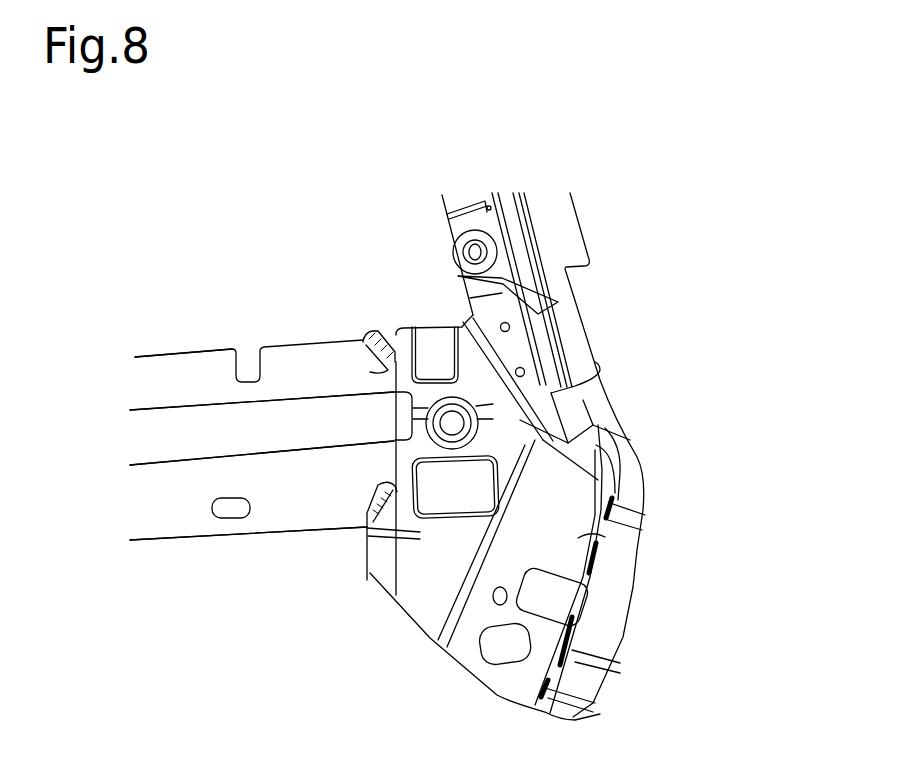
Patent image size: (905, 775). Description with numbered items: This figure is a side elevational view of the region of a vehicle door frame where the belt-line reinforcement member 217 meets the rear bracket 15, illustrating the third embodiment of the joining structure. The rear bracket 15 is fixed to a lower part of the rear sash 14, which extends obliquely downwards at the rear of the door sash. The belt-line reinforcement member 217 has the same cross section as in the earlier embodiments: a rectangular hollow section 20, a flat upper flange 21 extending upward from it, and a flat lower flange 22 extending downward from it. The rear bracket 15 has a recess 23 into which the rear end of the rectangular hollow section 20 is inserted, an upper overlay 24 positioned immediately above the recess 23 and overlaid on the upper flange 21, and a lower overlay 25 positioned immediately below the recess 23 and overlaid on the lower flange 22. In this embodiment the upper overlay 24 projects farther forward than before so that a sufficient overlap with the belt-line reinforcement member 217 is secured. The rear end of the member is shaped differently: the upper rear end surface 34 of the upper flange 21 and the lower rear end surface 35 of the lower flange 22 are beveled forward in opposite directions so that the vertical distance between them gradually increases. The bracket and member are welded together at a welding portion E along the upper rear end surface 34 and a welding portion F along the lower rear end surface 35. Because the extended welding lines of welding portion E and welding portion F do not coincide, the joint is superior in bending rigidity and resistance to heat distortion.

The rear sash 14 is at (563, 255).
The rear bracket 15 is at (630, 548).
The rectangular hollow section 20 is at (160, 437).
The upper flange 21 is at (213, 383).
The lower flange 22 is at (210, 528).
The recess 23 is at (395, 430).
The upper overlay 24 is at (393, 347).
The lower overlay 25 is at (396, 593).
The upper rear end surface 34 is at (380, 332).
The lower rear end surface 35 is at (368, 560).
The belt-line reinforcement member 217 is at (163, 539).
The welding portion E is at (370, 372).
The welding portion F is at (373, 488).